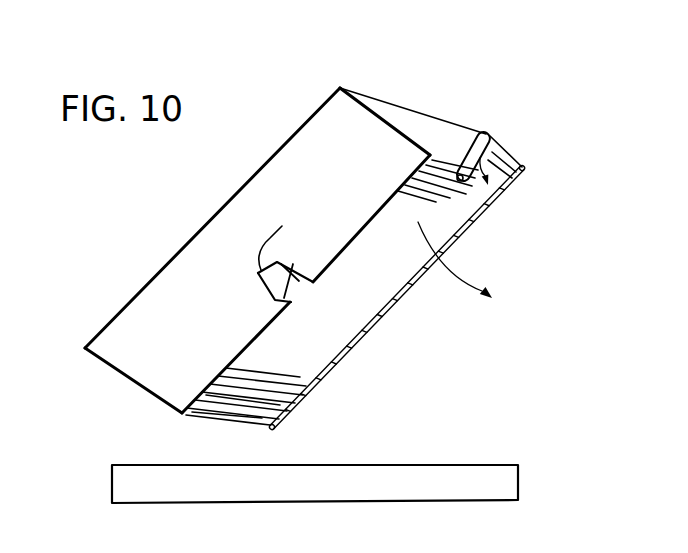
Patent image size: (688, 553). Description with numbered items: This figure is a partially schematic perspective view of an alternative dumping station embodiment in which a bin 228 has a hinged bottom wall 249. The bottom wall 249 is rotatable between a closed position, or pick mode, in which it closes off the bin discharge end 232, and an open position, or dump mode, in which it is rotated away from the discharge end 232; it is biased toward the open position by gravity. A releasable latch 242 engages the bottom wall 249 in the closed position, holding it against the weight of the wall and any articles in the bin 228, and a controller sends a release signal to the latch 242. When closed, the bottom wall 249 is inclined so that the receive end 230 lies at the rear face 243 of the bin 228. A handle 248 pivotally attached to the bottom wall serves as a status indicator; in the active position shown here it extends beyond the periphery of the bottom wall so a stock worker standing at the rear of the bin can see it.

The bin 228 is at (371, 67).
The receive end 230 is at (446, 125).
The bin discharge end 232 is at (188, 391).
The releasable latch 242 is at (273, 281).
The rear face 243 is at (415, 112).
The handle 248 is at (492, 135).
The hinged bottom wall 249 is at (320, 343).